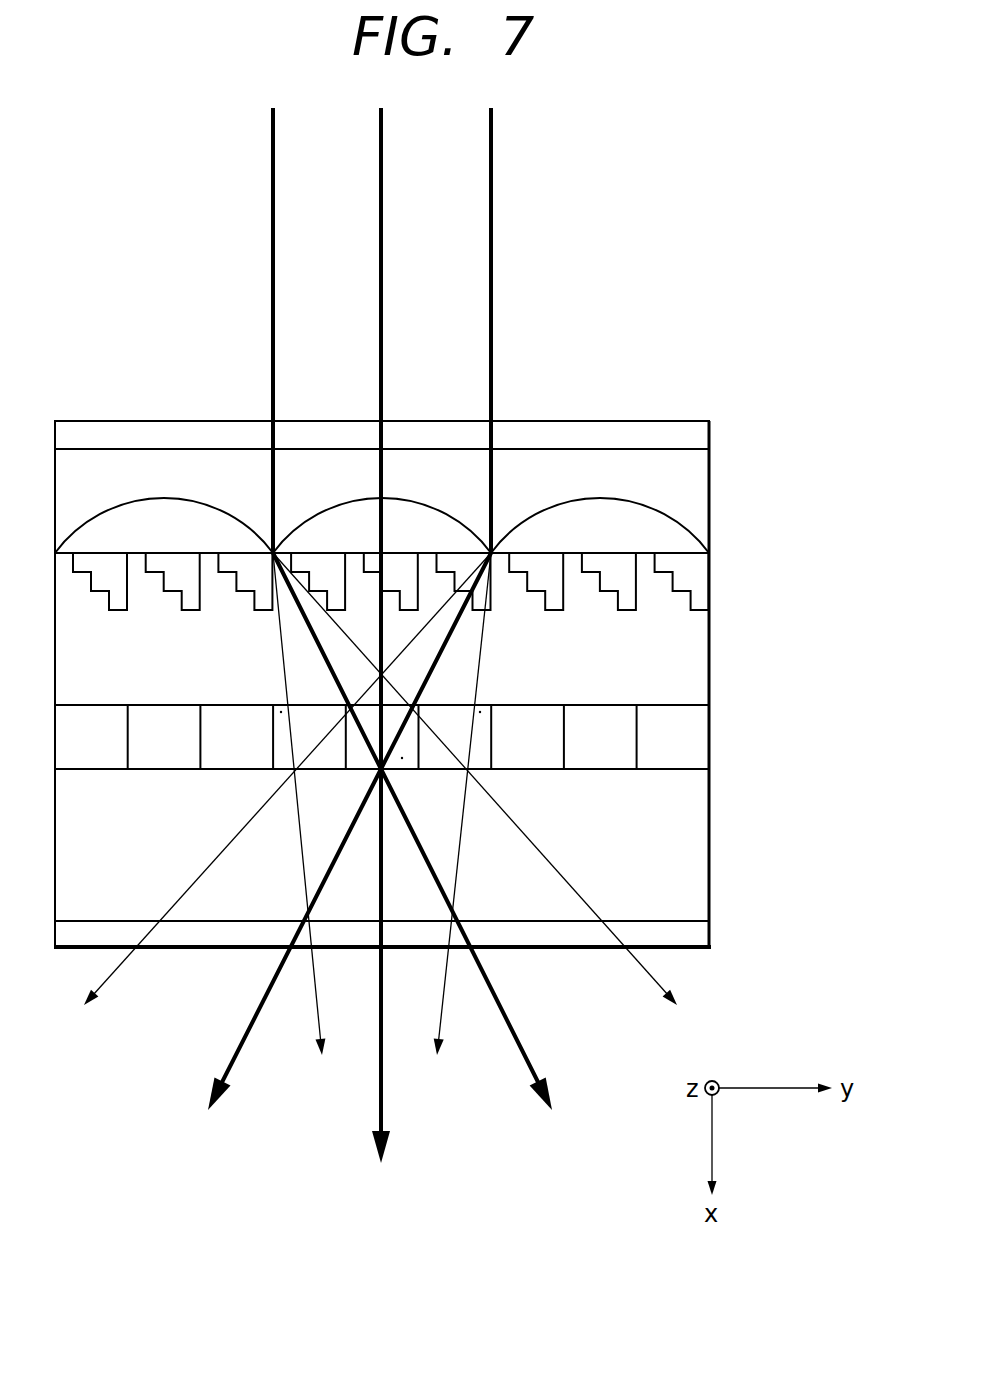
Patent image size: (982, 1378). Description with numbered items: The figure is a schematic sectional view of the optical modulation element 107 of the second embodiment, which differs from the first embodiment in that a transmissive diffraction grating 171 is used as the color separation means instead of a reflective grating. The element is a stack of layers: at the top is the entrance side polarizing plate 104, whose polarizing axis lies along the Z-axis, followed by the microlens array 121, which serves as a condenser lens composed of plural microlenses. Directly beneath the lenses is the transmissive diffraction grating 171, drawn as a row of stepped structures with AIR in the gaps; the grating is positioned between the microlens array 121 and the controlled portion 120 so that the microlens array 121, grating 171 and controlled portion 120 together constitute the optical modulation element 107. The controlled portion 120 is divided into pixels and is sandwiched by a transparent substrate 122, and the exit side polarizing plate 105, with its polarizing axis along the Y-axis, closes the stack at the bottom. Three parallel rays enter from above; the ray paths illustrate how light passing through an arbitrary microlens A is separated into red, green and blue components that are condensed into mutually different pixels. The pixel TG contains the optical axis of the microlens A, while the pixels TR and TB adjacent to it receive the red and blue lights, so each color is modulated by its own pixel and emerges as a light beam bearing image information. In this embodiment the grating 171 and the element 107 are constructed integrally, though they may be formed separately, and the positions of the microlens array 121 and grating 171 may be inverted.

The entrance side polarizing plate 104 is at (693, 439).
The microlens array 121 is at (693, 543).
The transmissive diffraction grating 171 is at (693, 636).
The air AIR is at (693, 583).
The controlled portion 120 is at (693, 747).
The transparent substrate 122 is at (693, 855).
The exit side polarizing plate 105 is at (425, 936).
The optical modulation element 107 is at (473, 686).
The microlens A is at (382, 540).
The pixel TR is at (280, 712).
The pixel TB is at (480, 712).
The pixel TG is at (402, 758).